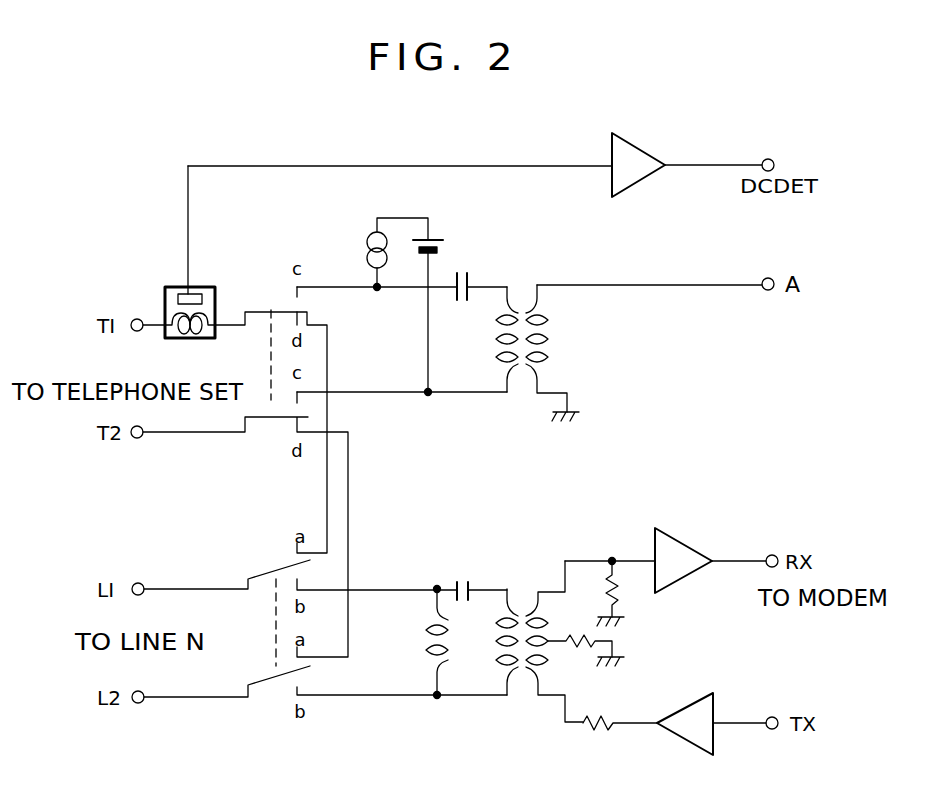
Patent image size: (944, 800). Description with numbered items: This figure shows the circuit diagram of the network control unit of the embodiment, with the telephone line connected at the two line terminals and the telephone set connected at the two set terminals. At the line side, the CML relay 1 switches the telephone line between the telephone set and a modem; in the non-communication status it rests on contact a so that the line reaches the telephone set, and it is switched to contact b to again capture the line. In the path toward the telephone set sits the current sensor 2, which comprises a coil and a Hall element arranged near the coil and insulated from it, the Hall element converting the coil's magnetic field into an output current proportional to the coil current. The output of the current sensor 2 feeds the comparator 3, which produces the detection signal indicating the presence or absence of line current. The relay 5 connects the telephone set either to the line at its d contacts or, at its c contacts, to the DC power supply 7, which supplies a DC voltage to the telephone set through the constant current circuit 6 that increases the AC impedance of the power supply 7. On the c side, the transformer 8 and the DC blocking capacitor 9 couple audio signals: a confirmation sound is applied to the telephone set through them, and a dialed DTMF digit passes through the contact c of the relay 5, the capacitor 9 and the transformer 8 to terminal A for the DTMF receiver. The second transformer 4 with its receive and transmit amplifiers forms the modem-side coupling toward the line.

The CML relay 1 is at (276, 620).
The current sensor 2 is at (168, 285).
The comparator 3 is at (640, 150).
The line transformer 4 is at (523, 690).
The relay 5 is at (271, 345).
The constant current circuit 6 is at (366, 230).
The power supply 7 is at (450, 248).
The transformer 8 is at (523, 390).
The DC blocking capacitor 9 is at (462, 303).